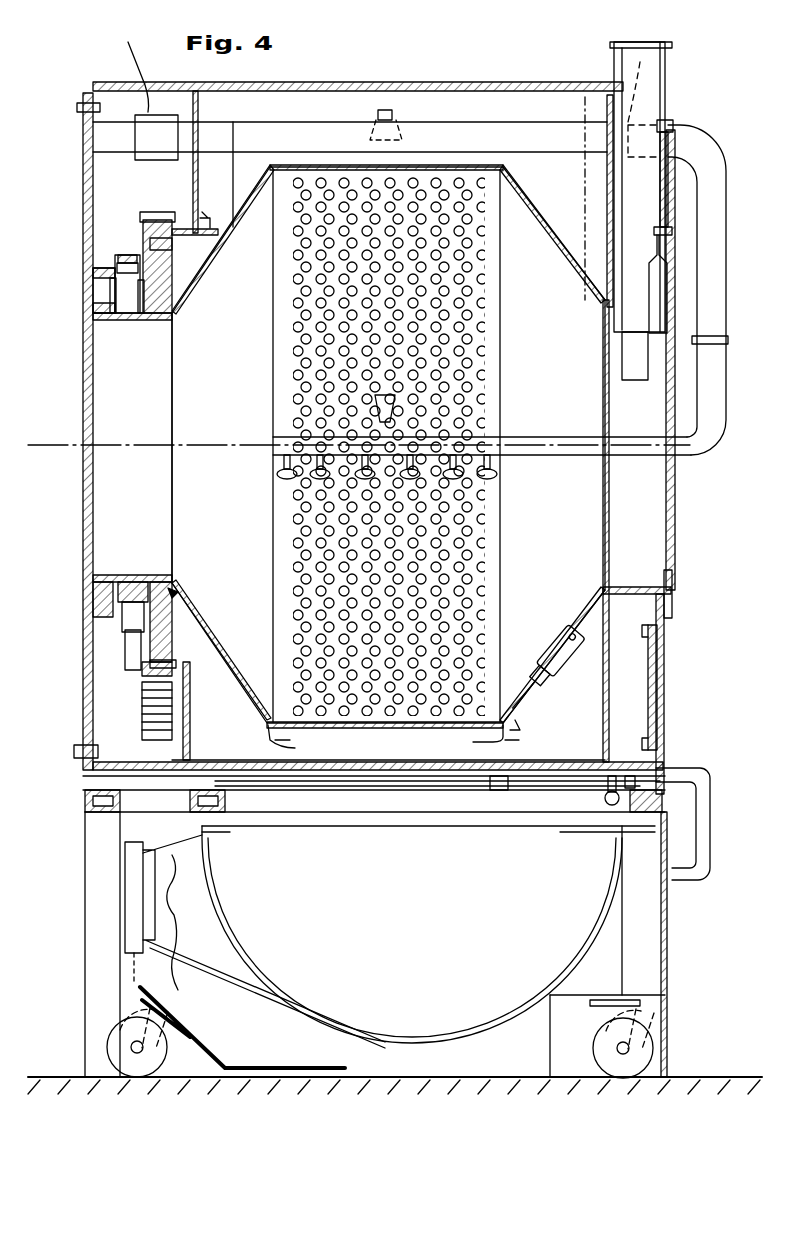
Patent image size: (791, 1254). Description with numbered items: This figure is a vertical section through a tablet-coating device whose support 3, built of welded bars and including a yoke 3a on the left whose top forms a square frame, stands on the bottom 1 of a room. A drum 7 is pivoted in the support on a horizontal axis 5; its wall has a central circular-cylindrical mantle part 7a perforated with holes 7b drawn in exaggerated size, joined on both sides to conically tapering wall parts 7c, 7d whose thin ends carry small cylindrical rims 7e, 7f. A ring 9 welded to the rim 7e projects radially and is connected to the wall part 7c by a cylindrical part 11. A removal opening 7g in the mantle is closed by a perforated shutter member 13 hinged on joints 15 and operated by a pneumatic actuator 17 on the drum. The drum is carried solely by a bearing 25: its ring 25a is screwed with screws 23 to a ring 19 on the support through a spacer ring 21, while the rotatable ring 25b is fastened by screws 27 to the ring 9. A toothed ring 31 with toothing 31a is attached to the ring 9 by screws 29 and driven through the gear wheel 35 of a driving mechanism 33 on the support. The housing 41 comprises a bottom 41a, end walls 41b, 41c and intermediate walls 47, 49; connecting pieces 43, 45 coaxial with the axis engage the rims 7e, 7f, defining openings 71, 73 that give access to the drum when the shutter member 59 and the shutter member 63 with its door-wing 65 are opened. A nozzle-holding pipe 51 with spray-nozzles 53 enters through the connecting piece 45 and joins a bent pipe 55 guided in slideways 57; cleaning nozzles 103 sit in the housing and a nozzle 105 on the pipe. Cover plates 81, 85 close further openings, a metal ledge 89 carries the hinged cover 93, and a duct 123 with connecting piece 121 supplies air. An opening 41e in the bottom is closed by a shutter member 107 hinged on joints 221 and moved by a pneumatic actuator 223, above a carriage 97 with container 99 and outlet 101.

The bottom of a space 1 is at (74, 1076).
The support 3 is at (78, 983).
The yoke 3a is at (93, 277).
The horizontal axis 5 is at (205, 440).
The drum 7 is at (258, 173).
The circular-cylindrical mantle part 7a is at (432, 164).
The holes 7b is at (495, 238).
The conically tapering wall part 7c is at (233, 219).
The conically tapering wall part 7d is at (537, 230).
The cylindrical rim 7e is at (163, 578).
The cylindrical rim 7f is at (597, 615).
The removal opening 7g is at (430, 740).
The ring 9 is at (183, 593).
The cylindrical part 11 is at (187, 227).
The shutter member 13 is at (500, 722).
The joints 15 is at (285, 742).
The pneumatic actuator 17 is at (553, 698).
The ring 19 is at (110, 614).
The spacer ring 21 is at (120, 650).
The screws 23 is at (121, 255).
The bearing 25 is at (175, 631).
The bearing ring 25a is at (174, 654).
The bearing ring 25b is at (138, 573).
The screws 27 is at (143, 322).
The screws 29 is at (172, 250).
The toothed ring 31 is at (120, 217).
The toothing 31a is at (158, 212).
The driving mechanism 33 is at (485, 785).
The gear wheel 35 is at (142, 712).
The housing 41 is at (88, 777).
The bottom 41a is at (122, 812).
The end wall 41b is at (74, 750).
The end wall 41c is at (662, 744).
The opening 41e is at (247, 754).
The connecting piece 43 is at (115, 322).
The connecting piece 45 is at (635, 598).
The intermediate wall 47 is at (155, 115).
The intermediate wall 49 is at (578, 112).
The nozzle-holding pipe 51 is at (530, 435).
The spray-nozzles 53 is at (505, 485).
The bent pipe 55 is at (680, 118).
The slideways 57 is at (715, 66).
The shutter member 59 is at (83, 214).
The shutter member 63 is at (672, 542).
The door-wing 65 is at (672, 573).
The opening 71 is at (162, 414).
The opening 73 is at (587, 485).
The cover plate 81 is at (657, 678).
The cover plate 85 is at (670, 198).
The metal ledge 89 is at (443, 83).
The hinged cover 93 is at (225, 100).
The carriage 97 is at (665, 940).
The container 99 is at (620, 898).
The outlet 101 is at (180, 970).
The nozzles 103 is at (382, 110).
The nozzle 105 is at (393, 391).
The shutter member 107 is at (505, 791).
The connecting piece 121 is at (615, 38).
The duct 123 is at (620, 66).
The joints 221 is at (660, 788).
The pneumatic actuator 223 is at (607, 806).